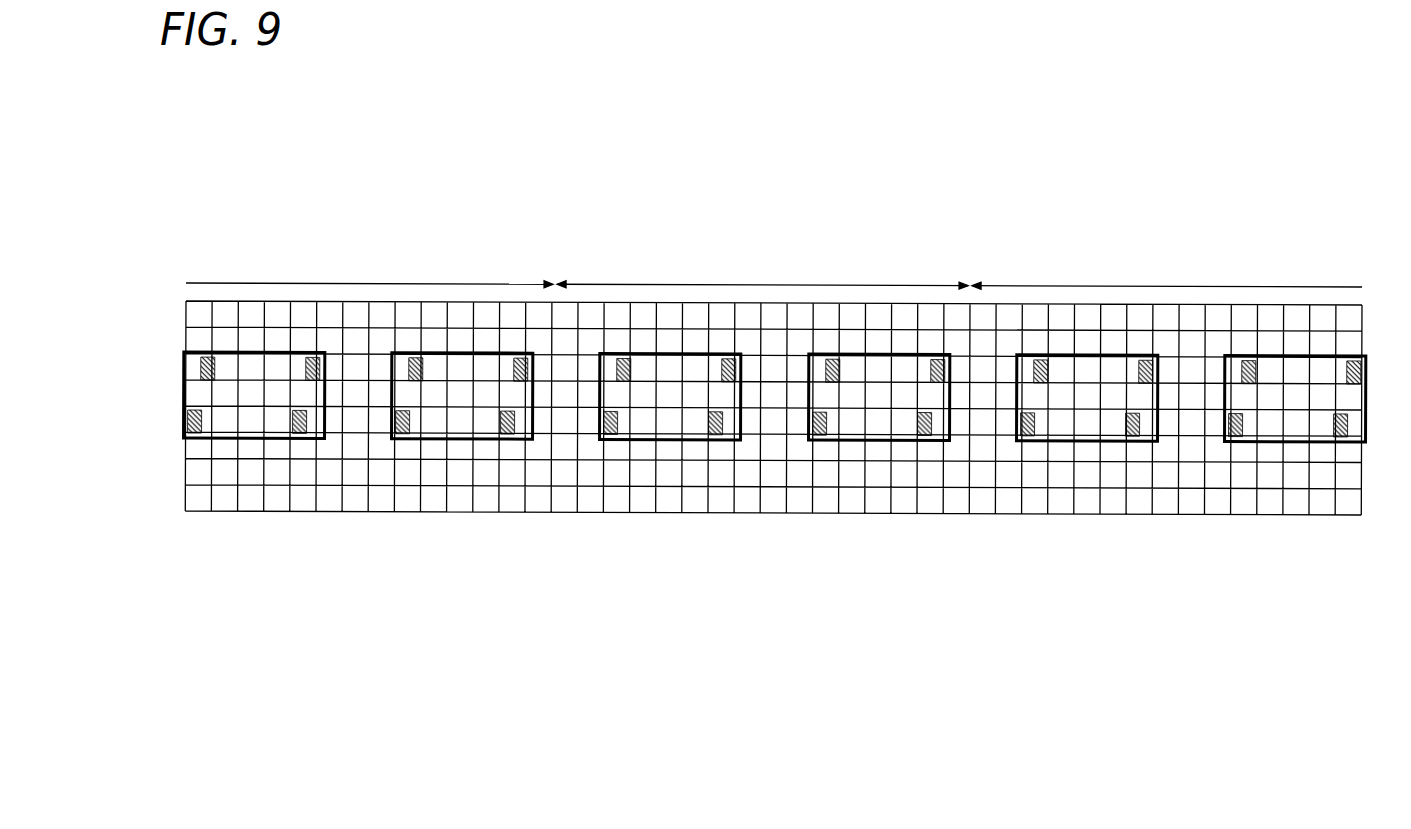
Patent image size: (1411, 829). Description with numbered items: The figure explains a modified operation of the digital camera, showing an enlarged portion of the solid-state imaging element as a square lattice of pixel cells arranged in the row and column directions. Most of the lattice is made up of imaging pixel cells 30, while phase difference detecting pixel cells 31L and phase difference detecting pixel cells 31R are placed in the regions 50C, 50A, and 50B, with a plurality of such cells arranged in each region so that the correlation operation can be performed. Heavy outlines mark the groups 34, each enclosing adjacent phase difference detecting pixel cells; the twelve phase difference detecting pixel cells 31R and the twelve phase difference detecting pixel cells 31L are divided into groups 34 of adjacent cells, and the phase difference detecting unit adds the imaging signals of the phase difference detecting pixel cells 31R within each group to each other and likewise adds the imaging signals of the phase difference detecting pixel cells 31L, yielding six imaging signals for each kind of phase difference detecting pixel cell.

The imaging pixel cell 30 is at (252, 318).
The group 34 is at (254, 382).
The phase difference detecting pixel cell 31L is at (199, 365).
The phase difference detecting pixel cell 31R is at (210, 418).
The region 50C is at (369, 271).
The region 50A is at (762, 272).
The region 50B is at (1167, 274).